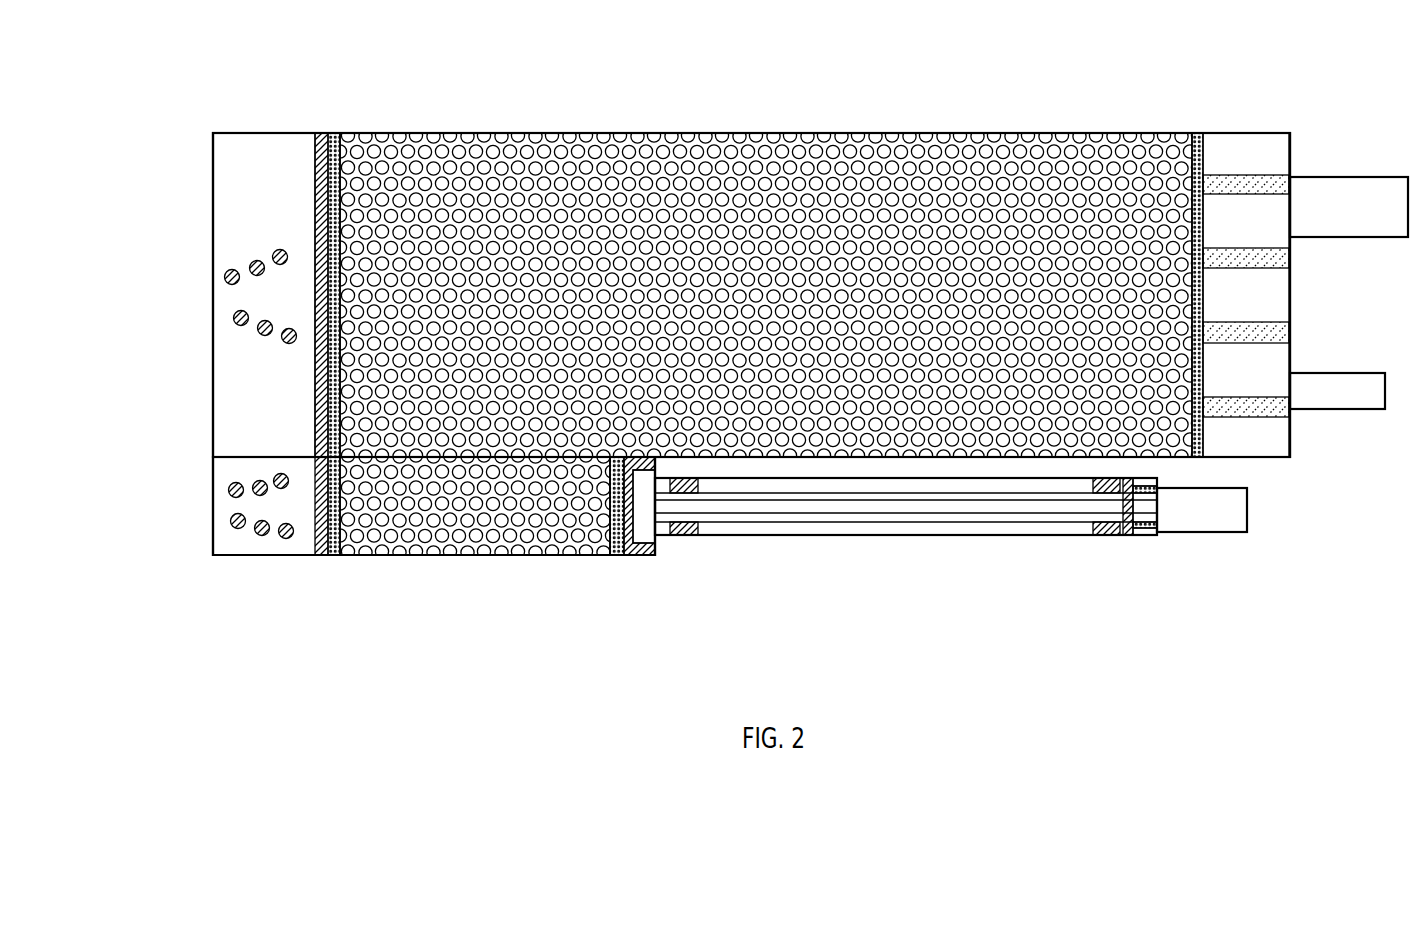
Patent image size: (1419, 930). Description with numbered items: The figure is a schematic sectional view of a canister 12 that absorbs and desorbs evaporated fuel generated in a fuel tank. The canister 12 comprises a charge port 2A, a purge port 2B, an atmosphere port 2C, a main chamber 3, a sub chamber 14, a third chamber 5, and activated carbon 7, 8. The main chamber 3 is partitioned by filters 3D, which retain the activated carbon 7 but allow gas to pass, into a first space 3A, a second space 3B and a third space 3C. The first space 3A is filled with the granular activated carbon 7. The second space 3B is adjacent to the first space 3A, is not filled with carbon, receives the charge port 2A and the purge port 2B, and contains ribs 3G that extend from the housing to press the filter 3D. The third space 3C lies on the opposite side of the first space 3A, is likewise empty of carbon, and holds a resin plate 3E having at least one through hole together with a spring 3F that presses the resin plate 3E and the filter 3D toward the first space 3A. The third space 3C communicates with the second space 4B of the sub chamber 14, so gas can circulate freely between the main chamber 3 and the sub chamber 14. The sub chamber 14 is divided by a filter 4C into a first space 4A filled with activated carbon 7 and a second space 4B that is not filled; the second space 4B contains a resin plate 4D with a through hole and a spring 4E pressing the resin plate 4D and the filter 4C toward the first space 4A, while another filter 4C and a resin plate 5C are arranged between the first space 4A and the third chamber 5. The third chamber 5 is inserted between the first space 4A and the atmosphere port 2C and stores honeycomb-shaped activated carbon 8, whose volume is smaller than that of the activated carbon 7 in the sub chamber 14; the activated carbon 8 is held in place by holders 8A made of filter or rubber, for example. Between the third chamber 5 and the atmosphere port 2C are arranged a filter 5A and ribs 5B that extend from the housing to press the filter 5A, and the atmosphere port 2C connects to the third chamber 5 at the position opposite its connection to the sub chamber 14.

The canister 12 is at (862, 72).
The main chamber 3 is at (421, 133).
The first space 3A is at (357, 143).
The second space 3B is at (1247, 157).
The third space 3C is at (240, 208).
The filter 3D is at (334, 150).
The resin plate 3E is at (315, 185).
The spring 3F is at (225, 273).
The ribs 3G is at (1255, 405).
The charge port 2A is at (1355, 185).
The purge port 2B is at (1348, 382).
The atmosphere port 2C is at (1228, 518).
The activated carbon 7 is at (545, 150).
The sub chamber 14 is at (436, 557).
The first space 4A is at (393, 556).
The second space 4B is at (230, 490).
The filter 4C is at (337, 556).
The resin plate 4D is at (322, 556).
The spring 4E is at (232, 521).
The third chamber 5 is at (818, 541).
The filter 5A is at (1128, 540).
The ribs 5B is at (1152, 540).
The resin plate 5C is at (637, 553).
The activated carbon 8 is at (966, 530).
The holders 8A is at (690, 540).